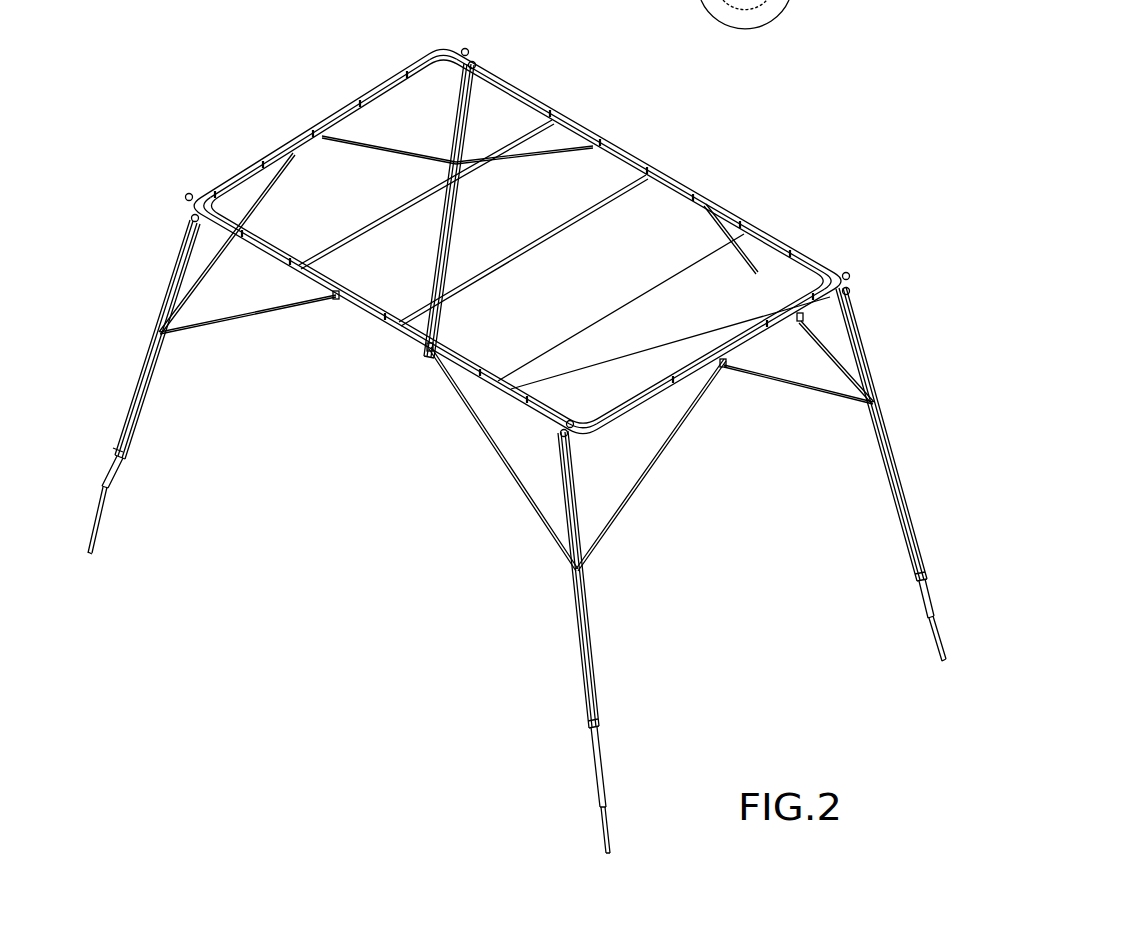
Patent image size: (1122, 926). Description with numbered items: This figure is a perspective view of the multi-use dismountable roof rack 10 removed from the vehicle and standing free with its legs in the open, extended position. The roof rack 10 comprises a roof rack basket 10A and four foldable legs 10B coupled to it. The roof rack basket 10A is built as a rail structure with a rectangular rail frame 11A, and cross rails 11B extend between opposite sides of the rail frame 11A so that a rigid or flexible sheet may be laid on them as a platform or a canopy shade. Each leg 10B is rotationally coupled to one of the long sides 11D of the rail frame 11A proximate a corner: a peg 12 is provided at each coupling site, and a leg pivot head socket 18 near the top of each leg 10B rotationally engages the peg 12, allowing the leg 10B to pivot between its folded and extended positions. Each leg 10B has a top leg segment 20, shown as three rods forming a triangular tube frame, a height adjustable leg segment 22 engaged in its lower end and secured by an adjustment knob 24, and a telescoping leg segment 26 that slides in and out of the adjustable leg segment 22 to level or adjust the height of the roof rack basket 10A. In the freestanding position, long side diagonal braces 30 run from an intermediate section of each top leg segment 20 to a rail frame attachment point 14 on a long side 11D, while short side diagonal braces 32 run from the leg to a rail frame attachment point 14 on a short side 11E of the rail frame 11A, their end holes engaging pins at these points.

The roof rack 10 is at (645, 168).
The roof rack basket 10A is at (382, 100).
The foldable legs 10B is at (482, 112).
The rail frame 11A is at (583, 132).
The cross rails 11B is at (378, 232).
The long sides 11D is at (745, 218).
The short side 11E is at (268, 148).
The peg 12 is at (474, 62).
The rail frame attachment point 14 is at (337, 305).
The leg pivot head socket 18 is at (460, 52).
The top leg segment 20 is at (172, 290).
The height adjustable leg segment 22 is at (111, 492).
The adjustment knob 24 is at (125, 458).
The telescoping leg segment 26 is at (98, 543).
The long side diagonal braces 30 is at (525, 156).
The short side diagonal braces 32 is at (395, 148).